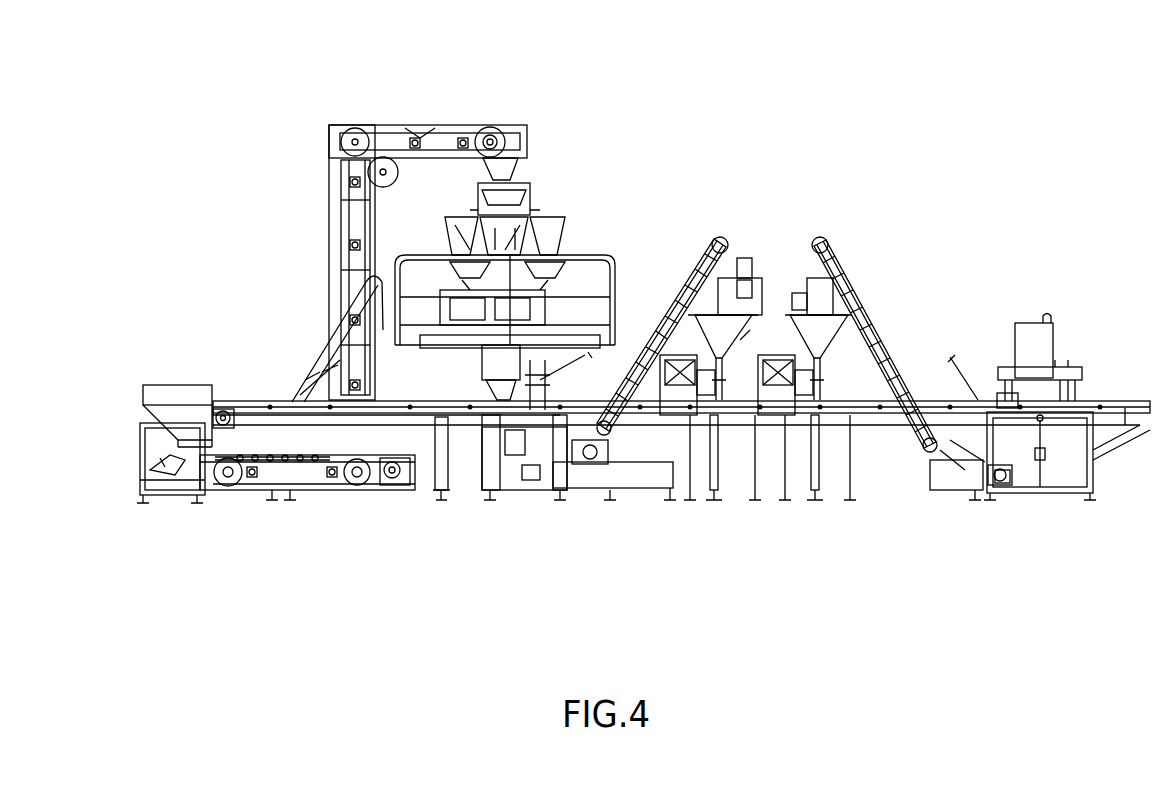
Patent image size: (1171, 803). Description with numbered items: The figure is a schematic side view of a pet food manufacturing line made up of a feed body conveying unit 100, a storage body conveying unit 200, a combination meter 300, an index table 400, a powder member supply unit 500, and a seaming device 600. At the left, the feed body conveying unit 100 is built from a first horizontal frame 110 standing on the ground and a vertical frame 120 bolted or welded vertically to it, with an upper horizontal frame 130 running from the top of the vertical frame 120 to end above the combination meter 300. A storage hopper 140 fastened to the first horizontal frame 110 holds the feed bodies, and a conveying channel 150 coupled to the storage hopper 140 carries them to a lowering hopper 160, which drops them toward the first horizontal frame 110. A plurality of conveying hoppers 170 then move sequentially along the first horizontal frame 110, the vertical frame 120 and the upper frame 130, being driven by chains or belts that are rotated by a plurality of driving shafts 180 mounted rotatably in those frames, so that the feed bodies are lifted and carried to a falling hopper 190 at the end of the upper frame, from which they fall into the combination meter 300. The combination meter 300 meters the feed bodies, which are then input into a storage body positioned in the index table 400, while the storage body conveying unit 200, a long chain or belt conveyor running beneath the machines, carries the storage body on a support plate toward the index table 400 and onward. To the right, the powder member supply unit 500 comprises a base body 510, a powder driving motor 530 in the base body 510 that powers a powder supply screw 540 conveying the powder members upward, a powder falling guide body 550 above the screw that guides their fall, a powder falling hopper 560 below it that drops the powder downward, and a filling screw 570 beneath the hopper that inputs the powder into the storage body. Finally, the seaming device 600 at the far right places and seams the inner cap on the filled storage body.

The feed body conveying unit 100 is at (146, 335).
The first horizontal frame 110 is at (250, 488).
The vertical frame 120 is at (370, 215).
The horizontal transfer conveyor 130 is at (462, 127).
The storage hopper 140 is at (173, 385).
The conveying channel 150 is at (225, 412).
The lowering hopper 160 is at (255, 400).
The conveying hoppers 170 is at (295, 487).
The driving shafts 180 is at (215, 486).
The falling hopper 190 is at (513, 168).
The storage body conveying unit 200 is at (440, 490).
The combination meter 300 is at (548, 212).
The index table 400 is at (520, 488).
The powder member supply unit 500 is at (782, 140).
The base body 510 is at (635, 488).
The powder driving motor 530 is at (588, 466).
The powder supply screw 540 is at (655, 320).
The powder falling guide body 550 is at (700, 300).
The powder falling hopper 560 is at (730, 262).
The filling screw 570 is at (714, 490).
The seaming device 600 is at (1030, 298).